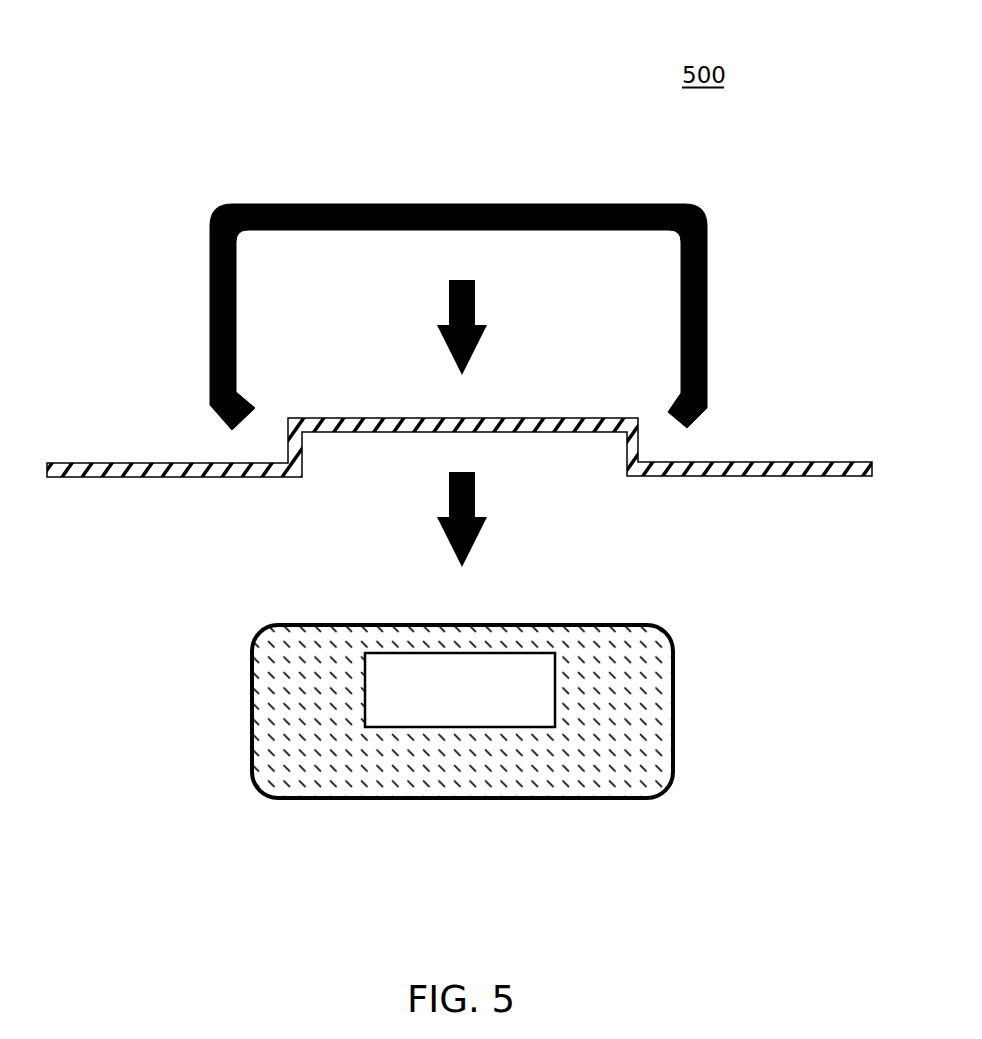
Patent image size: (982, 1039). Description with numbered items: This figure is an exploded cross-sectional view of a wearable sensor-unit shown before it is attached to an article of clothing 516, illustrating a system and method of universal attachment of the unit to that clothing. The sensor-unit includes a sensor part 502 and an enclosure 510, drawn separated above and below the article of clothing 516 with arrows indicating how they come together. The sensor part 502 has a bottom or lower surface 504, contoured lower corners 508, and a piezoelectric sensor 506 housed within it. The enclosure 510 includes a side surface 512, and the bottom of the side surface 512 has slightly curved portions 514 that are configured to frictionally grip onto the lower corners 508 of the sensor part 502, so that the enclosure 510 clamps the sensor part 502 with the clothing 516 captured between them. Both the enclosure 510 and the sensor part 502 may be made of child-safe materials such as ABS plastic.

The sensor part 502 is at (653, 718).
The bottom or lower surface 504 is at (365, 808).
The piezoelectric sensor 506 is at (563, 667).
The contoured lower corners 508 is at (252, 794).
The enclosure 510 is at (326, 198).
The side surface 512 is at (203, 310).
The slightly curved portions 514 is at (256, 393).
The article of clothing 516 is at (764, 456).